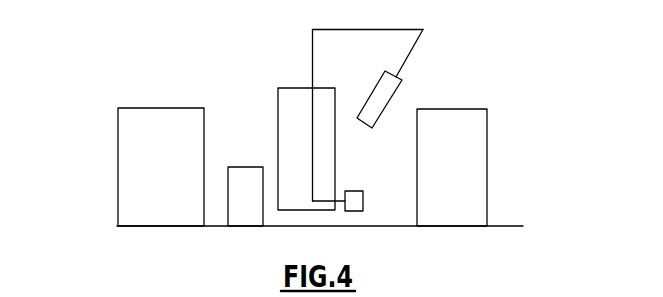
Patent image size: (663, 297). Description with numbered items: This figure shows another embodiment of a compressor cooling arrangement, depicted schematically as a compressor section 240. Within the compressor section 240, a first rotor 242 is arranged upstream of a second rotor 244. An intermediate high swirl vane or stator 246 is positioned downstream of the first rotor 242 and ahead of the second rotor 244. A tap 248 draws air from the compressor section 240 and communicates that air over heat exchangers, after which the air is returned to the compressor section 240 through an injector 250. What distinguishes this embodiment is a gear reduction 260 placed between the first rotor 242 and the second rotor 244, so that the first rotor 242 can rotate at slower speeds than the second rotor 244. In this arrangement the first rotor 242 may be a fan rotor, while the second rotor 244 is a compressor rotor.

The compressor section 240 is at (88, 215).
The first rotor 242 is at (141, 158).
The second rotor 244 is at (470, 152).
The intermediate high swirl vane or stator 246 is at (295, 118).
The tap 248 is at (385, 91).
The injector 250 is at (356, 191).
The gear reduction 260 is at (235, 205).